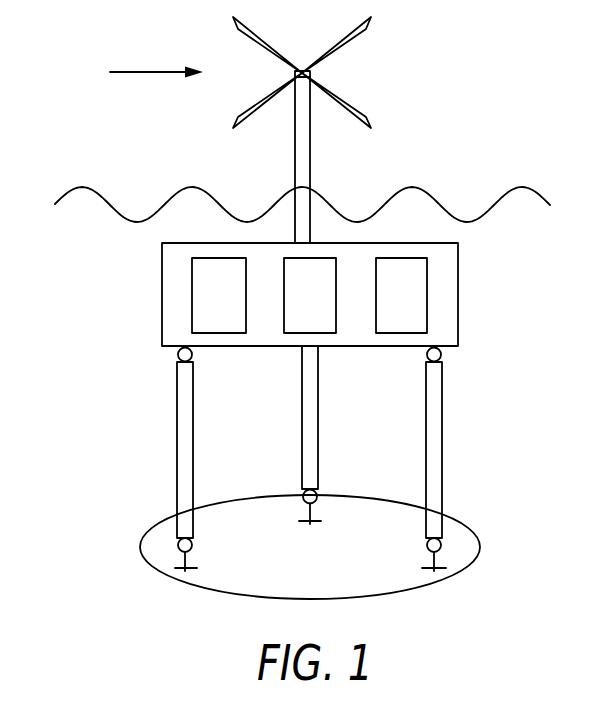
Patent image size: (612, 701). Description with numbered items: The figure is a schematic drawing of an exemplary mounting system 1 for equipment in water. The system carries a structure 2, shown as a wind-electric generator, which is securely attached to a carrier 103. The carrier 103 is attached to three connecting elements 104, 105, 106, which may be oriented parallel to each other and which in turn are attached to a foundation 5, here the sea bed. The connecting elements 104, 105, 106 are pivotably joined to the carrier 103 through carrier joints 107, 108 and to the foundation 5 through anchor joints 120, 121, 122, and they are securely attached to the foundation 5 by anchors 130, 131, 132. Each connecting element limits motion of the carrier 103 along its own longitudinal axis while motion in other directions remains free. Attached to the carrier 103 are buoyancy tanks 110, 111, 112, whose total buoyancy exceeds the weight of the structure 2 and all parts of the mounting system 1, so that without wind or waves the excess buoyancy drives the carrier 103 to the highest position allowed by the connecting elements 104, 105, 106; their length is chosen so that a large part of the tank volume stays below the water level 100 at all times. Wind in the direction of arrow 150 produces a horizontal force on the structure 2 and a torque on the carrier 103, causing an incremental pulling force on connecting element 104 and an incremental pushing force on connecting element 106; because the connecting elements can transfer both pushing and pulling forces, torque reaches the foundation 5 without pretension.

The mounting system 1 is at (492, 295).
The structure 2 is at (306, 181).
The foundation 5 is at (459, 530).
The water level 100 is at (82, 187).
The carrier 103 is at (162, 267).
The connecting element 104 is at (177, 443).
The connecting element 105 is at (304, 420).
The connecting element 106 is at (440, 493).
The carrier joint 107 is at (178, 355).
The carrier joint 108 is at (441, 355).
The buoyancy tank 110 is at (192, 313).
The buoyancy tank 111 is at (322, 263).
The buoyancy tank 112 is at (413, 328).
The anchor joint 120 is at (178, 545).
The anchor joint 121 is at (316, 492).
The anchor joint 122 is at (442, 545).
The anchor 130 is at (181, 571).
The anchor 131 is at (305, 523).
The anchor 132 is at (445, 571).
The arrow 150 is at (135, 72).